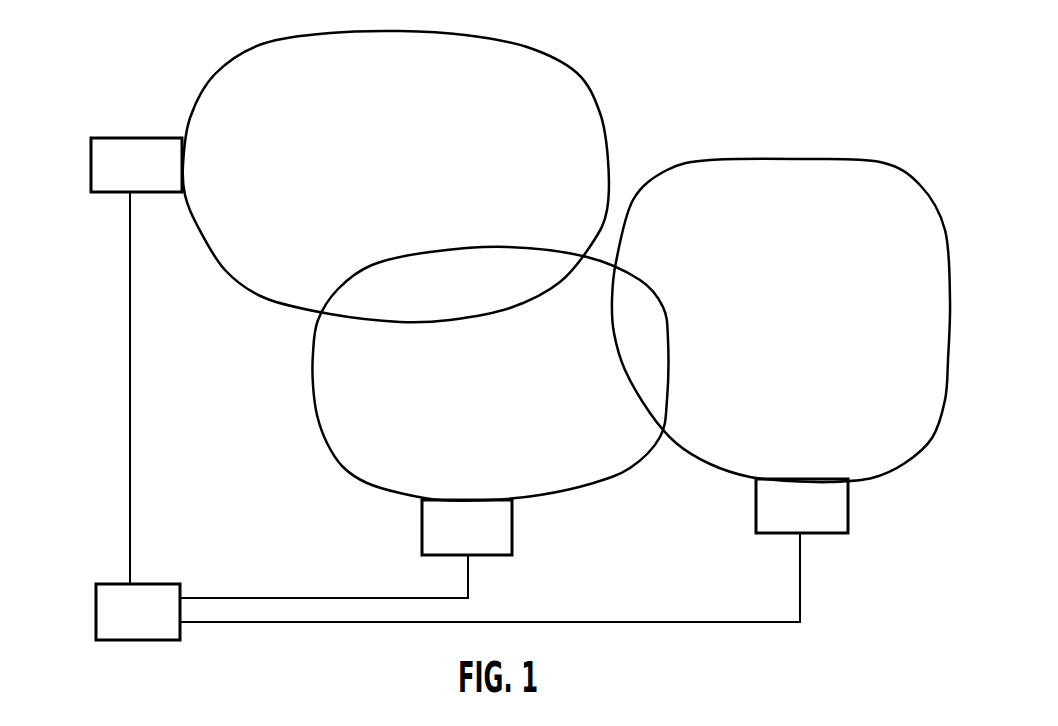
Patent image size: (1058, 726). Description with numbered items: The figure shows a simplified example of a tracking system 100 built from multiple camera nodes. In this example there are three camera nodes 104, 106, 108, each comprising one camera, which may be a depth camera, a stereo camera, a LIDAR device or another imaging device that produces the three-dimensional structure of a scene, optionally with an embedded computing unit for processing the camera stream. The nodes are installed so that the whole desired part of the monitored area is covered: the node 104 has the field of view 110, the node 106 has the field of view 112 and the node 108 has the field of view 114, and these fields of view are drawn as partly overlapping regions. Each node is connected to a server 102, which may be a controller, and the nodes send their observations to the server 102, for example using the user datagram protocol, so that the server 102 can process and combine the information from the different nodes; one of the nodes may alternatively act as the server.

The tracking system 100 is at (758, 74).
The server 102 is at (95, 602).
The camera node 104 is at (90, 165).
The camera node 106 is at (513, 510).
The camera node 108 is at (849, 497).
The field of view 110 is at (608, 146).
The field of view 112 is at (628, 443).
The field of view 114 is at (908, 171).